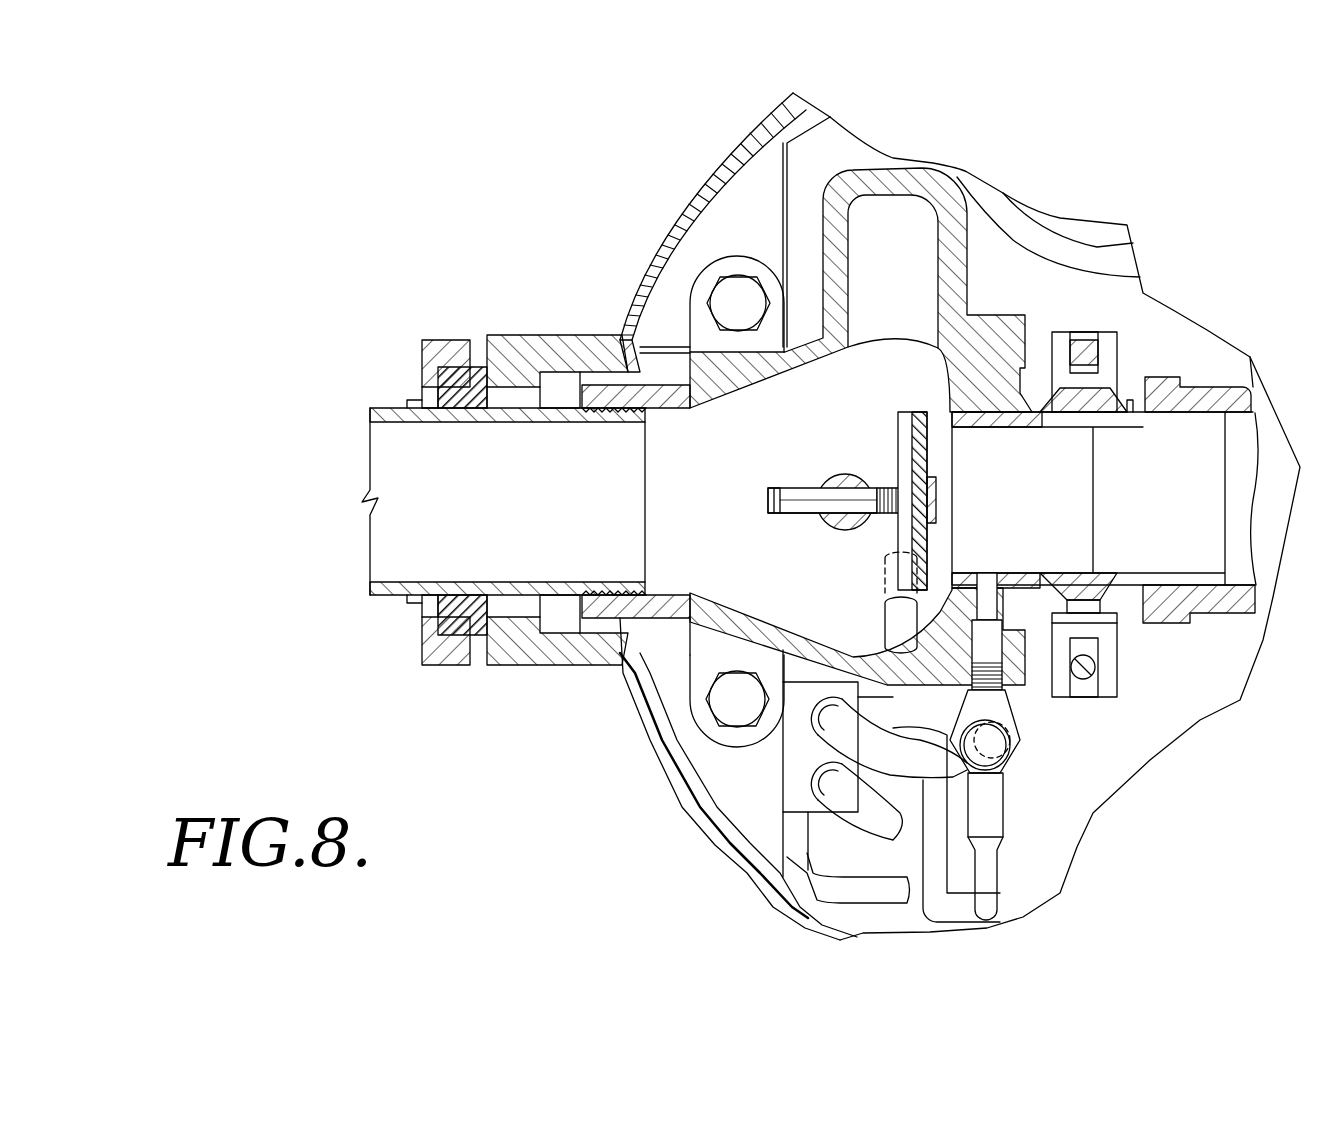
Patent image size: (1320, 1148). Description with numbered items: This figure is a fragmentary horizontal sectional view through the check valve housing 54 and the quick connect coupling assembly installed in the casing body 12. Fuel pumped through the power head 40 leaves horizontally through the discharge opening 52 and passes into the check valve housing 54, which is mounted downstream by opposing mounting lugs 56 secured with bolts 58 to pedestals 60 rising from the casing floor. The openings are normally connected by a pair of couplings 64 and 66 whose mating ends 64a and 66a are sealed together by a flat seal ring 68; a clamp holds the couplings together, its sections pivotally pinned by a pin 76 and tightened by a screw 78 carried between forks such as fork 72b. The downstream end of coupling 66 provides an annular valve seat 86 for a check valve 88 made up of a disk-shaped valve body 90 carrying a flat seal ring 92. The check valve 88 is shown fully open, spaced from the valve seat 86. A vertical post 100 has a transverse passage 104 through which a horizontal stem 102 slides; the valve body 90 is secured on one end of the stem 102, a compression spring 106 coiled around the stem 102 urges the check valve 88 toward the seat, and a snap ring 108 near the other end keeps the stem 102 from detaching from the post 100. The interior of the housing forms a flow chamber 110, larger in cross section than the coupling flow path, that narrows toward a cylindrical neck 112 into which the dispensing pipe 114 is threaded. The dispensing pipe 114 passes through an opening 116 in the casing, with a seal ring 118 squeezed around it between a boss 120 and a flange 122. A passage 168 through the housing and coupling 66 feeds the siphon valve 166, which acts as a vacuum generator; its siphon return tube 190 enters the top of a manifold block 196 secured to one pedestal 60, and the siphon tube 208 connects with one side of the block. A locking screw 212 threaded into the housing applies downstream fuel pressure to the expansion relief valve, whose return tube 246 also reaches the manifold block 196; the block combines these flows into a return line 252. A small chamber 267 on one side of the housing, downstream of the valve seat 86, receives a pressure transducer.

The casing body 12 is at (730, 163).
The power head 40 is at (1255, 385).
The discharge opening 52 is at (1183, 413).
The check valve housing 54 is at (990, 343).
The mounting lugs 56 is at (712, 280).
The bolts 58 is at (740, 300).
The pedestals 60 is at (677, 290).
The coupling 64 is at (1160, 415).
The mating end 64a is at (1108, 423).
The coupling 66 is at (998, 420).
The mating end 66a is at (1085, 417).
The flat seal ring 68 is at (1090, 572).
The clamp bracket 72b is at (1110, 697).
The pin 76 is at (1080, 337).
The screw 78 is at (1095, 660).
The annular valve seat 86 is at (943, 433).
The check valve 88 is at (895, 409).
The valve body 90 is at (898, 445).
The flat seal ring 92 is at (928, 540).
The vertical post 100 is at (835, 475).
The horizontal stem 102 is at (797, 513).
The transverse passage 104 is at (853, 510).
The compression spring 106 is at (887, 517).
The snap ring 108 is at (768, 490).
The flow chamber 110 is at (795, 500).
The cylindrical neck 112 is at (617, 417).
The dispensing pipe 114 is at (400, 408).
The opening 116 is at (510, 400).
The seal ring 118 is at (462, 390).
The boss 120 is at (510, 665).
The flange 122 is at (437, 347).
The siphon valve 166 is at (1038, 750).
The passage 168 is at (990, 640).
The tube 190 is at (873, 760).
The manifold block 196 is at (792, 765).
The siphon tube 208 is at (930, 887).
The locking screw 212 is at (888, 590).
The tube 246 is at (860, 820).
The return line 252 is at (833, 888).
The chamber 267 is at (910, 210).